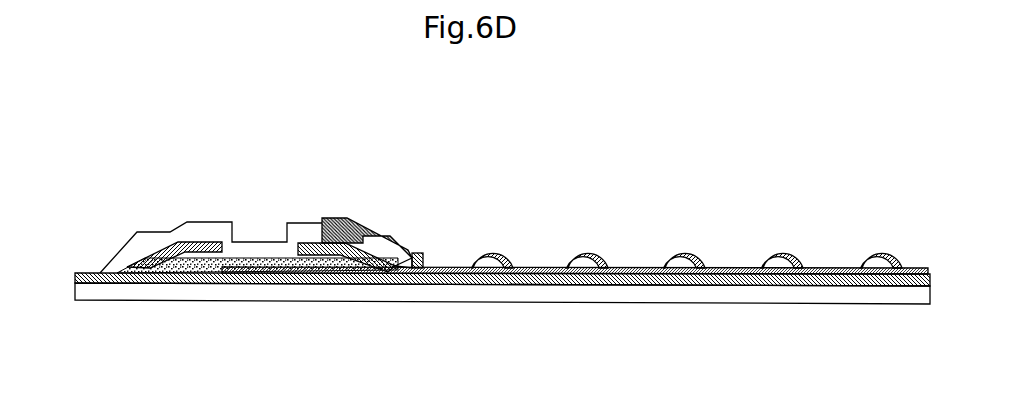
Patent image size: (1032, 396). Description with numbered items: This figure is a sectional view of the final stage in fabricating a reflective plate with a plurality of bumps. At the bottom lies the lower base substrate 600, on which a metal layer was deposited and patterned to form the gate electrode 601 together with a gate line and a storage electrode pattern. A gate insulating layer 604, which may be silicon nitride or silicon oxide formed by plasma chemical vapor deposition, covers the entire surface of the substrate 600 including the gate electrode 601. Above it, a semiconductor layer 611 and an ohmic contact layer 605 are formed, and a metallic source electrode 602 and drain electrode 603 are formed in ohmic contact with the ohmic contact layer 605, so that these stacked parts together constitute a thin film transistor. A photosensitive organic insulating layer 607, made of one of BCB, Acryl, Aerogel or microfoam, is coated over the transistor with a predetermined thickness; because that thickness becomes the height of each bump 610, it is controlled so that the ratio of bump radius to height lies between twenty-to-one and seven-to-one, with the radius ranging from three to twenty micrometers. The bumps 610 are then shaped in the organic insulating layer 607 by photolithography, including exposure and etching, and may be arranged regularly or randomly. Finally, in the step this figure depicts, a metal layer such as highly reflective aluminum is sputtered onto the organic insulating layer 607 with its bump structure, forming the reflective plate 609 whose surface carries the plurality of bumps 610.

The lower base substrate 600 is at (508, 292).
The gate electrode 601 is at (255, 277).
The source electrode 602 is at (203, 250).
The drain electrode 603 is at (303, 240).
The gate insulating layer 604 is at (633, 268).
The ohmic contact layer 605 is at (117, 263).
The photosensitive organic insulating layer 607 is at (170, 232).
The reflective plate 609 is at (783, 253).
The bump 610 is at (588, 253).
The semiconductor layer 611 is at (417, 252).